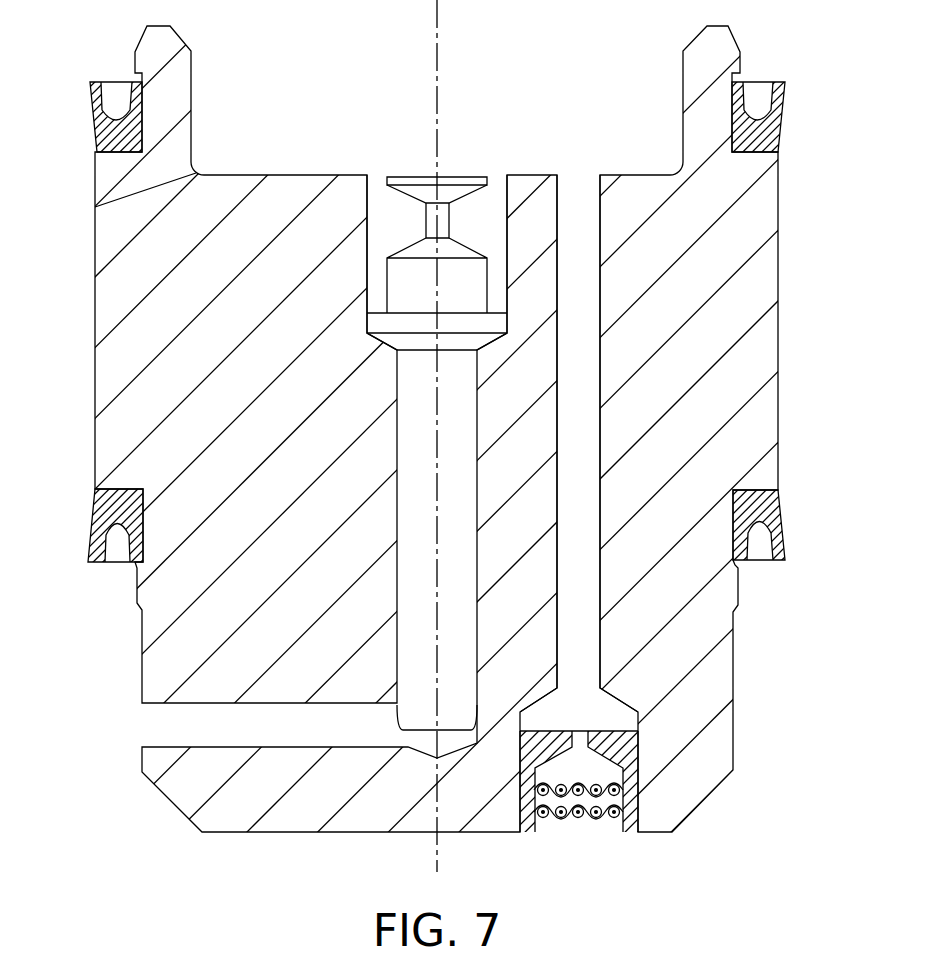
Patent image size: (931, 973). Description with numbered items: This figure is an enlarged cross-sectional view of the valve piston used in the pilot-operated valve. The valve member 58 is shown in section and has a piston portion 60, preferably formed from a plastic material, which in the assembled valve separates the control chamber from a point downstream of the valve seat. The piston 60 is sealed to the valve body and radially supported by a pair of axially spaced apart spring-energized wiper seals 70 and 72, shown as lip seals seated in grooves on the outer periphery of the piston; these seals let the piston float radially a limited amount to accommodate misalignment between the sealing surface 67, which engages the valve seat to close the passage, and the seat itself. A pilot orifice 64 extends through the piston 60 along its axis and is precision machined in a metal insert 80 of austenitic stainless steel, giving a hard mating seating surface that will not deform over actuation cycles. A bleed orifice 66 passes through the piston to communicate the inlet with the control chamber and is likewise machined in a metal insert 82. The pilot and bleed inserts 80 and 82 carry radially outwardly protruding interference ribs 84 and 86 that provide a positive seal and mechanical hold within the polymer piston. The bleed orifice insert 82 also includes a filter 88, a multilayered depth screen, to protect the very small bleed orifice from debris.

The valve member 58 is at (95, 235).
The piston portion 60 is at (118, 355).
The pilot orifice 64 is at (424, 218).
The bleed orifice 66 is at (576, 733).
The sealing surface 67 is at (172, 807).
The spring-energized wiper seal 70 is at (783, 120).
The spring-energized wiper seal 72 is at (782, 522).
The pilot orifice insert 80 is at (492, 208).
The bleed orifice insert 82 is at (644, 455).
The interference rib 84 is at (367, 203).
The interference rib 86 is at (518, 802).
The filter 88 is at (578, 846).